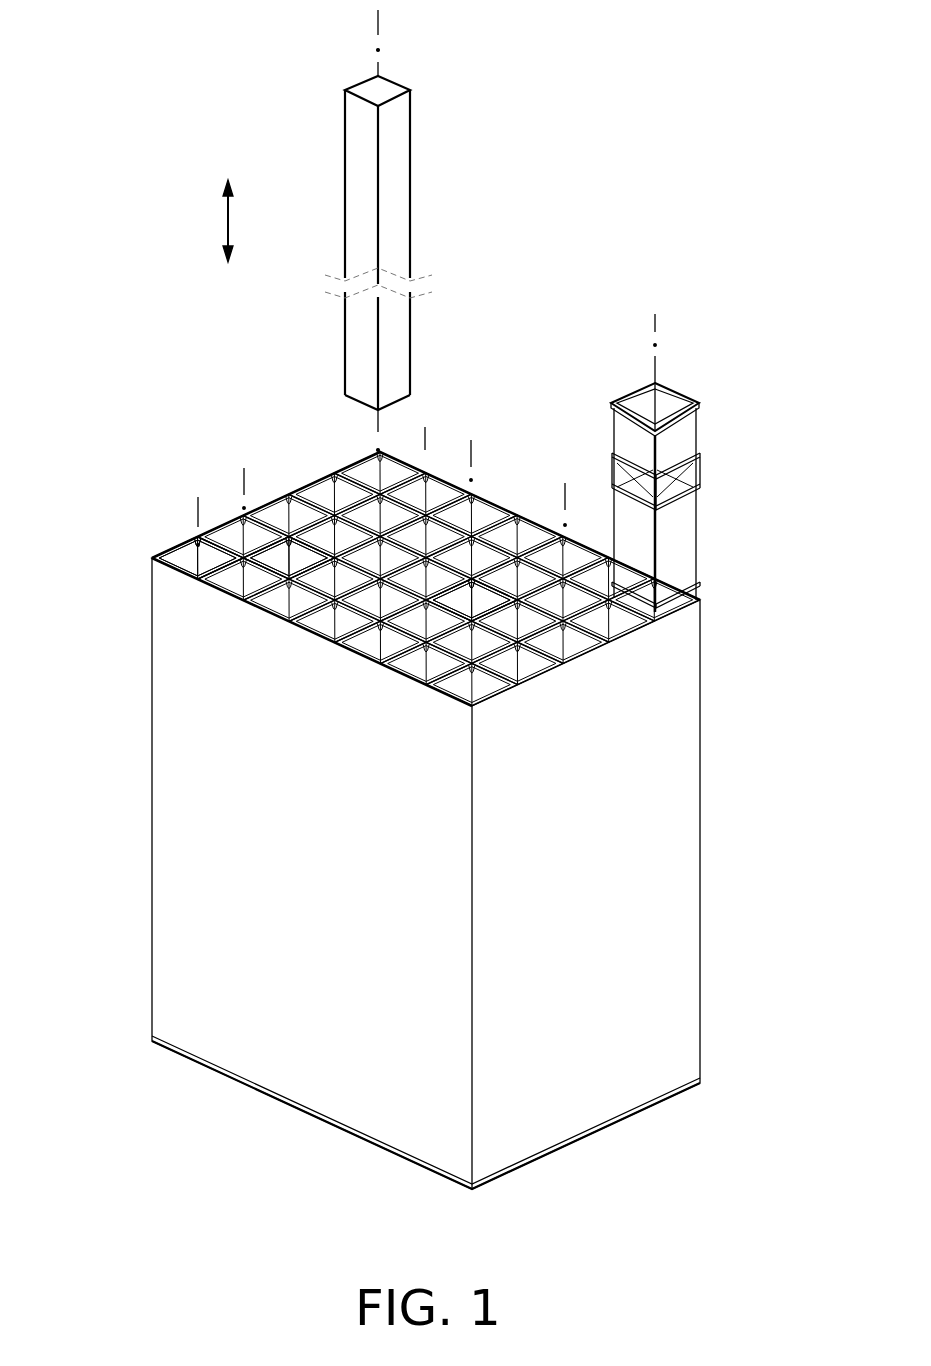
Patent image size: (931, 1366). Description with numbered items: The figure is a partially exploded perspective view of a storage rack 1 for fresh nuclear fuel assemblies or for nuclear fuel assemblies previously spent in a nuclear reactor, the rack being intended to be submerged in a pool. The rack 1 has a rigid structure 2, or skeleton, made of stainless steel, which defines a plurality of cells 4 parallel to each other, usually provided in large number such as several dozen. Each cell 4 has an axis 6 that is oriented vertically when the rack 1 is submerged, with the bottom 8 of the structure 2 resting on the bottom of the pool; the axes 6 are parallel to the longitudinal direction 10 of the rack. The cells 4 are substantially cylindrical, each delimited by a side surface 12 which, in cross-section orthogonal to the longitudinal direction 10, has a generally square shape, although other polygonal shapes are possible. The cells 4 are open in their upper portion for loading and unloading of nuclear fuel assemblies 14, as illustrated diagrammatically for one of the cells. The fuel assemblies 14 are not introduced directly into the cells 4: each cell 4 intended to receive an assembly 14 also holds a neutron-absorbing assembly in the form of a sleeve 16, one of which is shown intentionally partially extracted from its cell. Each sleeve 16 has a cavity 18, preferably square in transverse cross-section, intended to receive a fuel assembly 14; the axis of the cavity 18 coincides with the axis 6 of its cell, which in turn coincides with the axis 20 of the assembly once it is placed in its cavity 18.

The storage rack 1 is at (213, 398).
The rigid structure 2 is at (153, 858).
The cell 4 is at (237, 528).
The axis 6 is at (198, 503).
The bottom 8 is at (258, 1088).
The longitudinal direction 10 is at (227, 220).
The side surface 12 is at (267, 538).
The nuclear fuel assembly 14 is at (403, 200).
The sleeve 16 is at (712, 498).
The cavity 18 is at (668, 410).
The axis of the assembly 20 is at (378, 22).